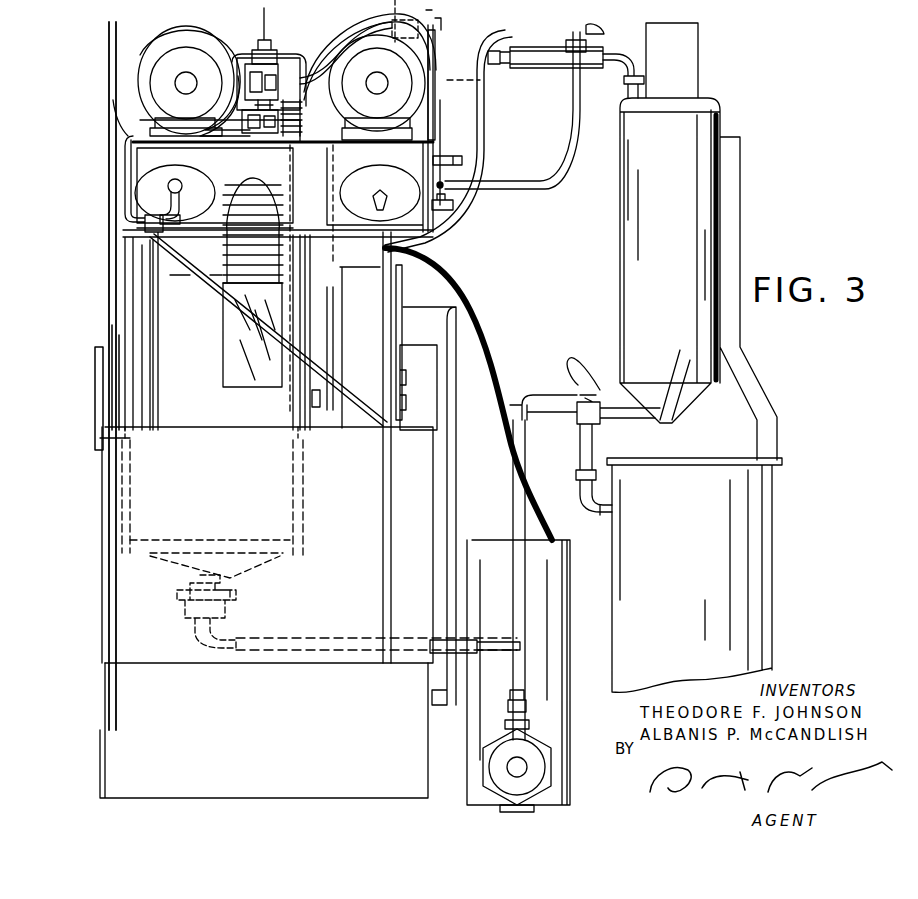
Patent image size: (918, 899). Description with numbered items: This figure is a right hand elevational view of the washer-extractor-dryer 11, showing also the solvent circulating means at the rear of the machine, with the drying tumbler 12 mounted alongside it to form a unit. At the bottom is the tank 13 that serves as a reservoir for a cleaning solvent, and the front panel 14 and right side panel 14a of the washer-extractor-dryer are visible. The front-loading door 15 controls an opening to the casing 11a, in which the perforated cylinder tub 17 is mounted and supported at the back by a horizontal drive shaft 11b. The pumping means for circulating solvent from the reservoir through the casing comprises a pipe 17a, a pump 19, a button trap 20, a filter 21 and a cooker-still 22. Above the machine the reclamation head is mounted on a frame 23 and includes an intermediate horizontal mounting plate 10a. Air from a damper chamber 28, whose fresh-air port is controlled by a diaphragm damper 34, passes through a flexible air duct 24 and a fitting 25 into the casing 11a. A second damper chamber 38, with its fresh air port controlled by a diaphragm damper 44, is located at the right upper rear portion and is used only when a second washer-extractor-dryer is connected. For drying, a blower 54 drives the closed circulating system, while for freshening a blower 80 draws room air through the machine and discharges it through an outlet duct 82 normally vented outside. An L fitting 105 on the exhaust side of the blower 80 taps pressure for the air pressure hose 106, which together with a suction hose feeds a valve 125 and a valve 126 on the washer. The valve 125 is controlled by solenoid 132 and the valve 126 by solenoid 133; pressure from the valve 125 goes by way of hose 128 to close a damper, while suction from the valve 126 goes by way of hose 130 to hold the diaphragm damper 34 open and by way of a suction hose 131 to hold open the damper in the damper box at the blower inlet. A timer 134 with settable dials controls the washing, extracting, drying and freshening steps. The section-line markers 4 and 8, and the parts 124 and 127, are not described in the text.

The section line 4- 4 is at (285, 417).
The section line 8- 8 is at (326, 155).
The intermediate horizontal mounting plate 10a is at (142, 161).
The washer-extractor-dryer 11 is at (116, 499).
The casing 11a is at (186, 426).
The horizontal drive shaft 11b is at (318, 426).
The drying tumbler 12 is at (380, 59).
The tank 13 is at (128, 759).
The front panel 14 is at (109, 66).
The right side panel 14a is at (127, 584).
The front-loading door 15 is at (96, 394).
The perforated cylinder tub 17 is at (296, 567).
The pipe 17a is at (376, 633).
The pump 19 is at (538, 781).
The button trap 20 is at (565, 705).
The filter 21 is at (625, 269).
The cooker-still 22 is at (630, 601).
The frame 23 is at (413, 247).
The air duct 24 is at (250, 181).
The fitting 25 is at (222, 361).
The damper chamber 28 is at (283, 176).
The diaphragm damper 34 is at (172, 171).
The second damper chamber 38 is at (438, 223).
The diaphragm damper 44 is at (402, 193).
The blower 54 is at (232, 61).
The blower 80 is at (380, 25).
The outlet duct 82 is at (445, 37).
The L fitting 105 is at (443, 35).
The air pressure hose 106 is at (318, 43).
The control box 124 is at (300, 49).
The valve 125 is at (276, 32).
The valve 126 is at (272, 140).
The drum 127 is at (186, 80).
The hose 128 is at (216, 113).
The hose 130 is at (125, 133).
The suction hose 131 is at (377, 87).
The solenoid 132 is at (226, 23).
The solenoid 133 is at (240, 147).
The timer 134 is at (393, 288).